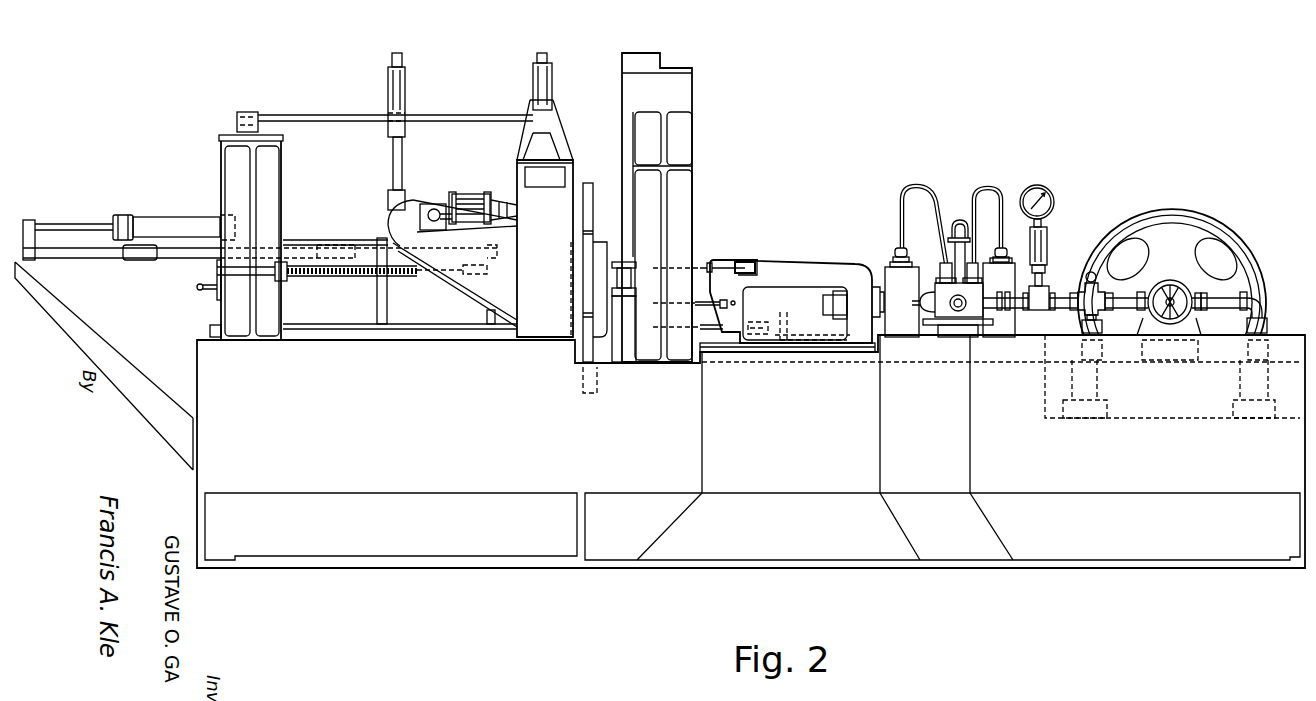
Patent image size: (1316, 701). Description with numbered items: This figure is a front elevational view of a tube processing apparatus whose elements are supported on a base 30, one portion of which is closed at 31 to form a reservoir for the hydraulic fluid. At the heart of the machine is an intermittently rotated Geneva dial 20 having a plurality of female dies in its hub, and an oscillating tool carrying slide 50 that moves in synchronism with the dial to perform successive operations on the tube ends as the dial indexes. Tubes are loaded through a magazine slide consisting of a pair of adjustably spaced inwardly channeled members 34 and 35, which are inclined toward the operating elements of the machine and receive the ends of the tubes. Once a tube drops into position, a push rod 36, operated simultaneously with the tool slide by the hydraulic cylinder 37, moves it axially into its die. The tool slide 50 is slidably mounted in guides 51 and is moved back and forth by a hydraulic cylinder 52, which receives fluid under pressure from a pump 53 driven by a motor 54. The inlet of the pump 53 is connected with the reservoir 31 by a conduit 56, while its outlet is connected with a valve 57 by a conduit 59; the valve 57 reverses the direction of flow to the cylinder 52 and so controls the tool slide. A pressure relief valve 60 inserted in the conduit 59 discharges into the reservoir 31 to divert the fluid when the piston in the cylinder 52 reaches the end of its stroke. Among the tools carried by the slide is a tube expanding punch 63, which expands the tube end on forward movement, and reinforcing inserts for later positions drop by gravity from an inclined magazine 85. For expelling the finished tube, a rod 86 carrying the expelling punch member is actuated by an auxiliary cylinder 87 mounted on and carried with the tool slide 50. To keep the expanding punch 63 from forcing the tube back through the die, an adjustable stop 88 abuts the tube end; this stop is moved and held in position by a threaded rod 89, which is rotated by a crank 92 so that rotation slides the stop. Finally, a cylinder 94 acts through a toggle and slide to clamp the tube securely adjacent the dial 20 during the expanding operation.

The Geneva dial 20 is at (587, 185).
The base 30 is at (420, 418).
The reservoir 31 is at (1175, 418).
The inwardly channeled member 34 is at (398, 52).
The inwardly channeled member 35 is at (540, 52).
The push rod 36 is at (178, 258).
The hydraulic cylinder 37 is at (180, 222).
The tool carrying slide 50 is at (802, 266).
The guides 51 is at (856, 344).
The hydraulic cylinder 52 is at (930, 328).
The pump 53 is at (1183, 262).
The motor 54 is at (1182, 205).
The conduit 56 is at (1224, 302).
The valve 57 is at (925, 300).
The conduit 59 is at (1037, 259).
The pressure relief valve 60 is at (1103, 305).
The tube expanding punch 63 is at (700, 262).
The inclined magazine 85 is at (645, 60).
The rod 86 is at (752, 340).
The auxiliary cylinder 87 is at (797, 336).
The adjustable stop 88 is at (470, 270).
The rod 89 is at (318, 276).
The crank 92 is at (205, 288).
The cylinder 94 is at (490, 175).